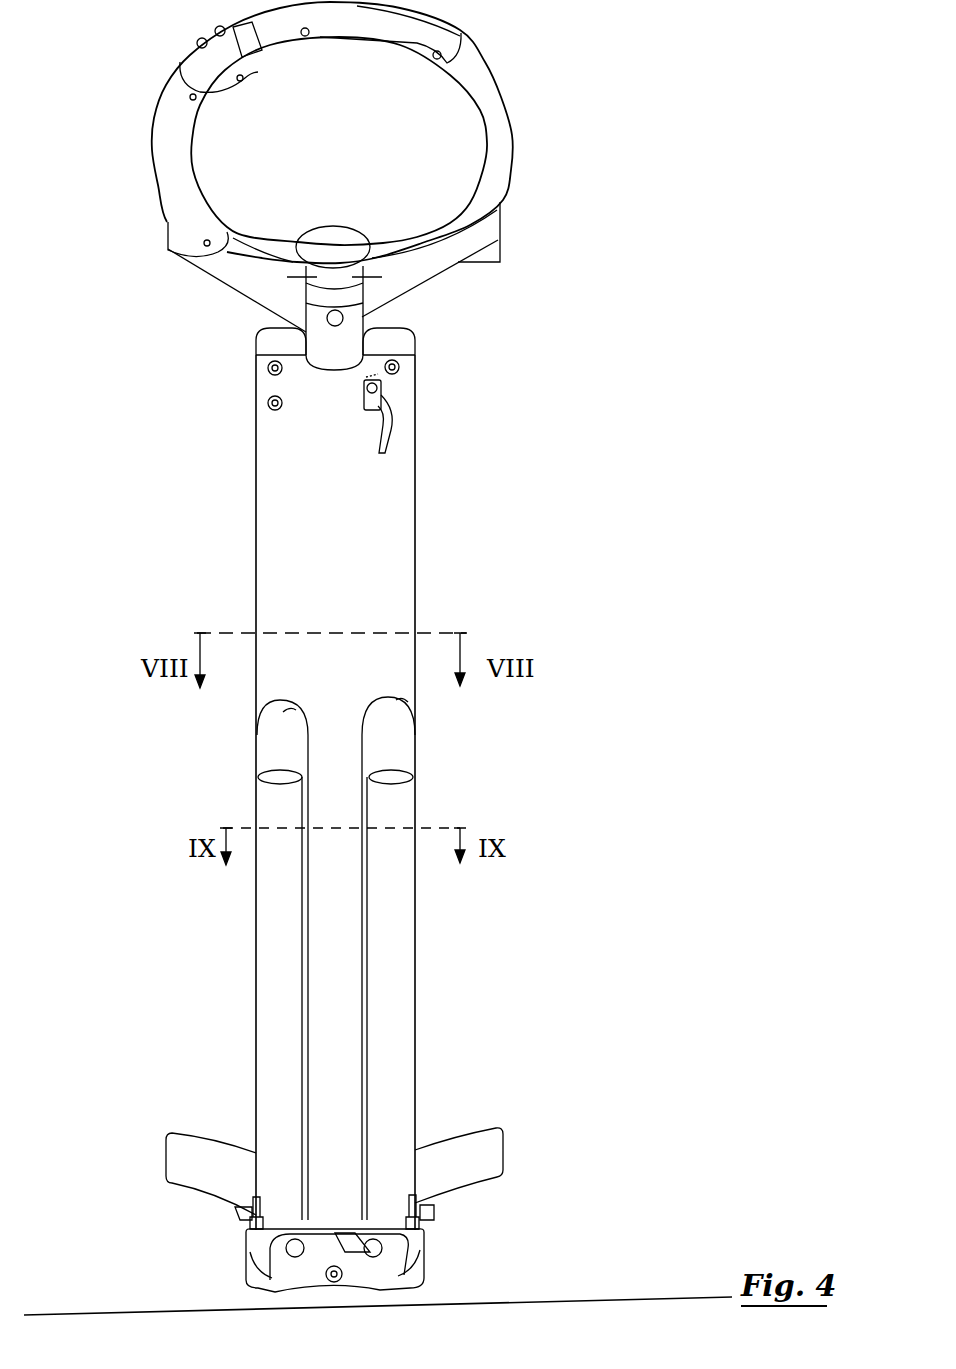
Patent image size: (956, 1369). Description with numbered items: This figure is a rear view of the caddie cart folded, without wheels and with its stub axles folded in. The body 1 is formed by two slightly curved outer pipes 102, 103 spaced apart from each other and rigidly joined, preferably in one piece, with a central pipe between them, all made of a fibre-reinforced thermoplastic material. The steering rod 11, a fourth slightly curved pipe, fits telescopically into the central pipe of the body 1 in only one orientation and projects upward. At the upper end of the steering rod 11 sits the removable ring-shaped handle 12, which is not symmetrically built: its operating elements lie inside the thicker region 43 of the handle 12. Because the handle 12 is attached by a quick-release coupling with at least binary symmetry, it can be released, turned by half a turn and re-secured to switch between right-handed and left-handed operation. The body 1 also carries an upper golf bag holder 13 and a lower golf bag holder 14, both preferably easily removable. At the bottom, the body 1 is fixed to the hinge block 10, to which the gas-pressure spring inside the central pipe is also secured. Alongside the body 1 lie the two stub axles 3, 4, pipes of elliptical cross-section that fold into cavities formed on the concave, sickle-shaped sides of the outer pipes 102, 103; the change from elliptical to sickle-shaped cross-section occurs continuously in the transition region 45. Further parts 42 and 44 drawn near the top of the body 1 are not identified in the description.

The body 1 is at (418, 527).
The stub axle 3 is at (395, 912).
The stub axle 4 is at (272, 915).
The hinge block 10 is at (378, 1270).
The steering rod 11 is at (330, 353).
The handle 12 is at (499, 140).
The upper golf bag holder 13 is at (462, 264).
The lower golf bag holder 14 is at (485, 1153).
The stem 42 is at (353, 322).
The thicker region 43 is at (207, 67).
The lever 44 is at (390, 397).
The transition region 45 is at (283, 712).
The outer pipe 102 is at (397, 348).
The outer pipe 103 is at (277, 347).